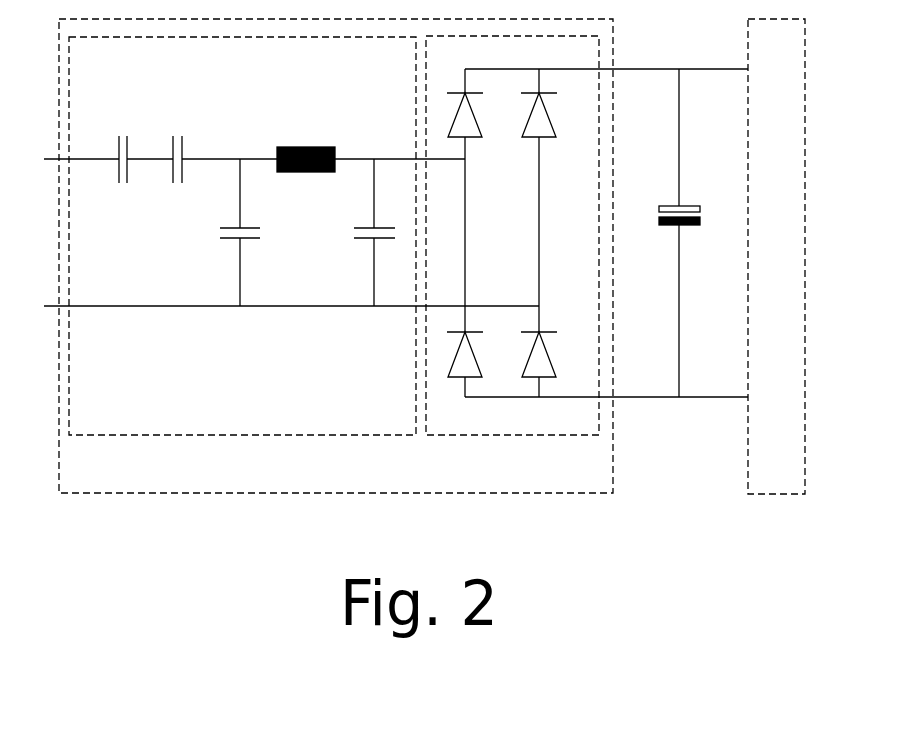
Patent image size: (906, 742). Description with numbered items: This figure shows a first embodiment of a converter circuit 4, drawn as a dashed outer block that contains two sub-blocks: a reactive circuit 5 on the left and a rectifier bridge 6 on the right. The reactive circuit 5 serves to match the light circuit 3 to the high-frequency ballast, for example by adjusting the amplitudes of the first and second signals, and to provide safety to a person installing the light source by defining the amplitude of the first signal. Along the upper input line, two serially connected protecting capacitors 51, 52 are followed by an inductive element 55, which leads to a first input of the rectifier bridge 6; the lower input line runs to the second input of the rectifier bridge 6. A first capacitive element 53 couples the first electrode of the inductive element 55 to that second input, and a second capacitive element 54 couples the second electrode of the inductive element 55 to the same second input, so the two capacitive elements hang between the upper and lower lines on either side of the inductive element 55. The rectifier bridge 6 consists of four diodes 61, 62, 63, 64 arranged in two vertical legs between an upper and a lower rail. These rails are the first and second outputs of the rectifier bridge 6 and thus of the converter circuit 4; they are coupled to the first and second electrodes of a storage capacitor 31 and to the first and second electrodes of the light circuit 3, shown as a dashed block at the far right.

The light circuit 3 is at (775, 494).
The converter circuit 4 is at (103, 493).
The reactive circuit 5 is at (251, 435).
The rectifier bridge 6 is at (500, 435).
The storage capacitor 31 is at (688, 233).
The protecting capacitor 51 is at (125, 145).
The protecting capacitor 52 is at (179, 145).
The first capacitive element 53 is at (364, 232).
The second capacitive element 54 is at (249, 232).
The inductive element 55 is at (306, 139).
The diode 61 is at (476, 115).
The diode 62 is at (476, 354).
The diode 63 is at (550, 115).
The diode 64 is at (550, 354).